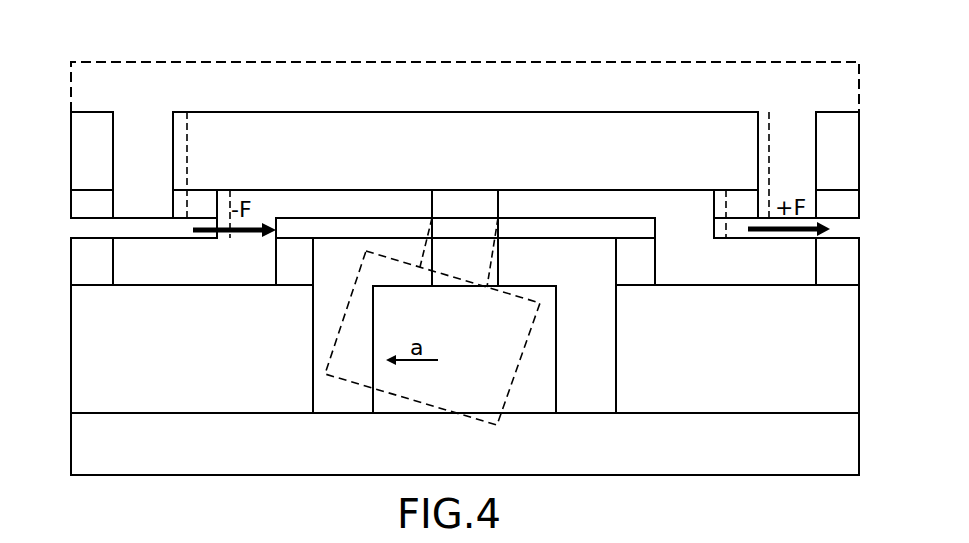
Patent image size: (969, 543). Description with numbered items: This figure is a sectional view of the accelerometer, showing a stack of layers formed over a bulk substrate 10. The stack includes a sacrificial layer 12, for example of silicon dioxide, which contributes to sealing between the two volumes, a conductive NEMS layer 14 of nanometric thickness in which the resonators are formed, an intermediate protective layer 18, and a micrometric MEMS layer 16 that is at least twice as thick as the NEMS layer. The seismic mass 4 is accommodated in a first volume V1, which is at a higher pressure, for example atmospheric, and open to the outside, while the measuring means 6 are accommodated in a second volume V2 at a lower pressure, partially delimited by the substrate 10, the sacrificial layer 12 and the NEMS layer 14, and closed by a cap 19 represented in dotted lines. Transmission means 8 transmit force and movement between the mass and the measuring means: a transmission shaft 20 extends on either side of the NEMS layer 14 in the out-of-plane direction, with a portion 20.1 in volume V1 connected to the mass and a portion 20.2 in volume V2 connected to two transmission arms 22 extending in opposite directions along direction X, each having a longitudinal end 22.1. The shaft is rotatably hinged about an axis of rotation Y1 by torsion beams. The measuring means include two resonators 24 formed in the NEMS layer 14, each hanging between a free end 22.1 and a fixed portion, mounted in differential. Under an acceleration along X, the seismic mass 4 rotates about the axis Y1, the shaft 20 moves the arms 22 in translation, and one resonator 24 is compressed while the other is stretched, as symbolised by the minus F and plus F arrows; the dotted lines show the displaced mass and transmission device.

The seismic mass 4 is at (530, 397).
The measuring means 6 is at (143, 246).
The transmission means 8 is at (693, 90).
The substrate 10 is at (852, 315).
The sacrificial layer 12 is at (852, 268).
The conductive layer 14 is at (852, 230).
The micrometric layer 16 is at (852, 152).
The intermediate layer 18 is at (852, 205).
The cap 19 is at (852, 92).
The transmission shaft 20 is at (511, 208).
The portion of the transmission shaft 20.1 is at (480, 257).
The portion of the transmission shaft 20.2 is at (442, 198).
The transmission arm 22 is at (295, 147).
The longitudinal end 22.1 is at (207, 148).
The resonator 24 is at (143, 227).
The first volume V1 is at (277, 455).
The second volume V2 is at (413, 85).
The axis of rotation Y1 is at (465, 205).